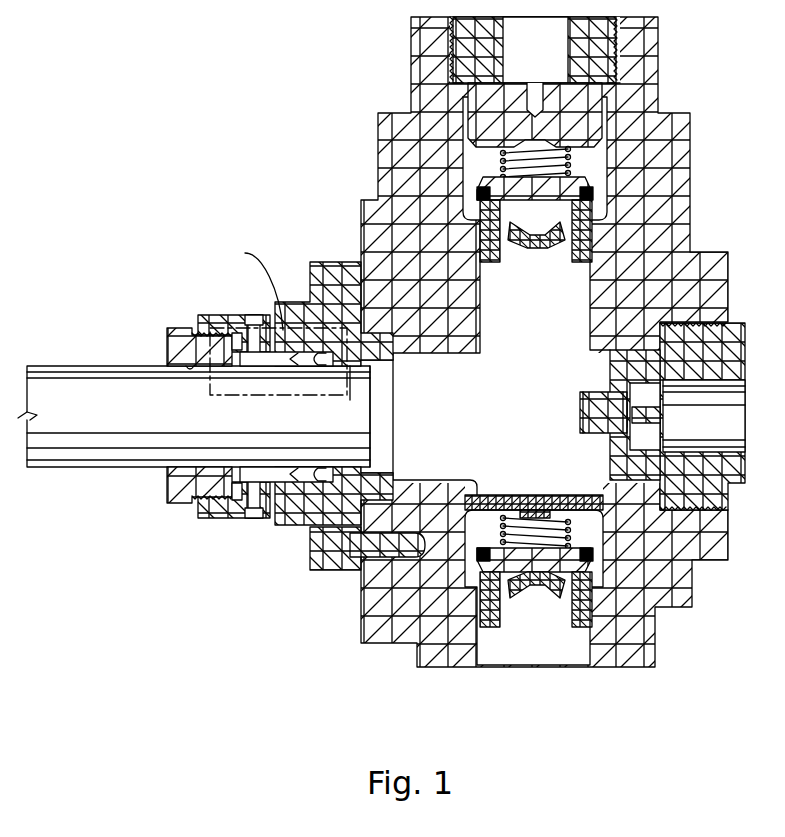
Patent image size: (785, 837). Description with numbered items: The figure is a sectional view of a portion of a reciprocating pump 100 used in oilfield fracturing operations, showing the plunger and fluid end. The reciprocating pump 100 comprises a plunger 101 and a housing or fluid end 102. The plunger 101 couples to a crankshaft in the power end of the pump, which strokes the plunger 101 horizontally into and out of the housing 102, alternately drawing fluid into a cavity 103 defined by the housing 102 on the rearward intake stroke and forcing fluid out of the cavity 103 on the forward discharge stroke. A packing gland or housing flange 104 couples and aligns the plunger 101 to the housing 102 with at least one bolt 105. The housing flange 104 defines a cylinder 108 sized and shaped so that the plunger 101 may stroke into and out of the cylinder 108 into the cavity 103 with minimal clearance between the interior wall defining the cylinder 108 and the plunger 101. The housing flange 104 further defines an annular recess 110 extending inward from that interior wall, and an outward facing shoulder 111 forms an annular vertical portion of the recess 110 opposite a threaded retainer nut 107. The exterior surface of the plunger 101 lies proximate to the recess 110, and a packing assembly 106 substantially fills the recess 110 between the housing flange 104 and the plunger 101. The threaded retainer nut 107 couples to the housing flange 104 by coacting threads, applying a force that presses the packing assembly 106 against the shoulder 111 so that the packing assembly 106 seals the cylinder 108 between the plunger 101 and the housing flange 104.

The reciprocating pump 100 is at (384, 342).
The plunger 101 is at (87, 365).
The housing or fluid end 102 is at (655, 635).
The cavity 103 is at (492, 450).
The packing gland or housing flange 104 is at (292, 527).
The bolt 105 is at (340, 560).
The packing assembly 106 is at (270, 493).
The threaded retainer nut 107 is at (177, 503).
The cylinder 108 is at (192, 372).
The annular recess 110 is at (310, 473).
The outward facing shoulder 111 is at (350, 392).